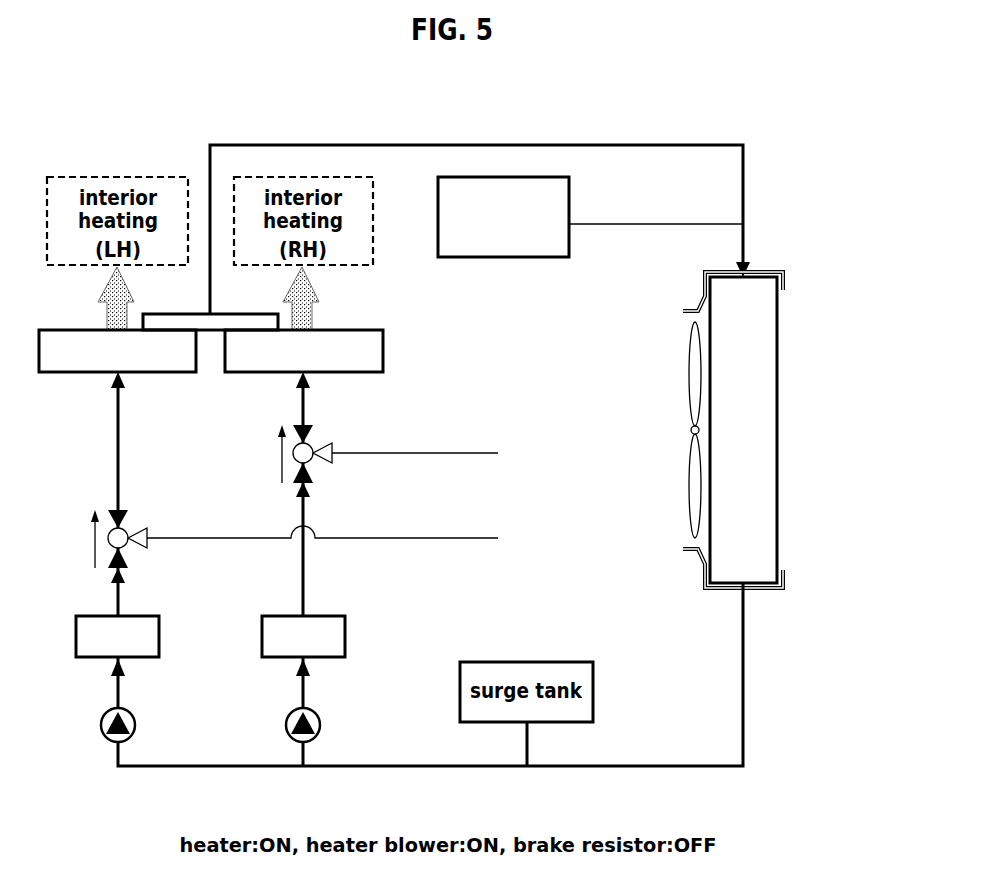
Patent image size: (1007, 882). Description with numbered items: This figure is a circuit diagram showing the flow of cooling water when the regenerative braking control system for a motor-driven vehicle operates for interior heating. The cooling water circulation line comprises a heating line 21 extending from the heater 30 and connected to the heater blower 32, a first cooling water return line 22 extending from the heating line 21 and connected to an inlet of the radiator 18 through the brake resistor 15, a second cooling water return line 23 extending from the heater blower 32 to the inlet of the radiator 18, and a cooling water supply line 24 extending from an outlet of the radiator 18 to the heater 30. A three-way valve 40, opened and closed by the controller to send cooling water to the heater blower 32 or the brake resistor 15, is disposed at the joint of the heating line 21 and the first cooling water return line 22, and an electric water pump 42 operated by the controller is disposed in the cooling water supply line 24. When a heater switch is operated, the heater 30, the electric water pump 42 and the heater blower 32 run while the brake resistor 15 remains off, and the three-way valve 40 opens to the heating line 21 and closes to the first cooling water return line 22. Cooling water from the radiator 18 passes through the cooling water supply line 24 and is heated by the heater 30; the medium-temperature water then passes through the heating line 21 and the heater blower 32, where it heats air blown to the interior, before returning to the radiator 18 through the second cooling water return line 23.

The brake resistor 15 is at (545, 257).
The radiator 18 is at (777, 433).
The heating line 21 is at (118, 442).
The first cooling water return line 22 is at (445, 537).
The second cooling water return line 23 is at (472, 145).
The cooling water supply line 24 is at (212, 766).
The heater 30 is at (152, 616).
The heater blower 32 is at (165, 373).
The 3-way valve 40 is at (130, 531).
The electric water pump 42 is at (135, 722).